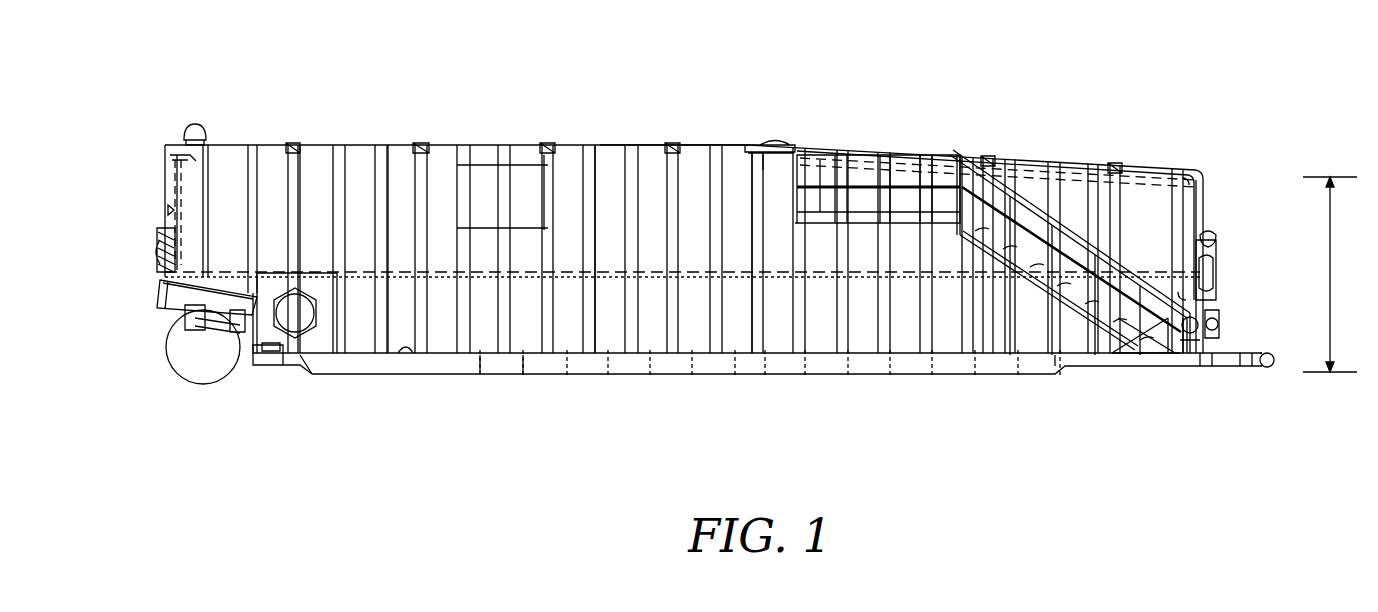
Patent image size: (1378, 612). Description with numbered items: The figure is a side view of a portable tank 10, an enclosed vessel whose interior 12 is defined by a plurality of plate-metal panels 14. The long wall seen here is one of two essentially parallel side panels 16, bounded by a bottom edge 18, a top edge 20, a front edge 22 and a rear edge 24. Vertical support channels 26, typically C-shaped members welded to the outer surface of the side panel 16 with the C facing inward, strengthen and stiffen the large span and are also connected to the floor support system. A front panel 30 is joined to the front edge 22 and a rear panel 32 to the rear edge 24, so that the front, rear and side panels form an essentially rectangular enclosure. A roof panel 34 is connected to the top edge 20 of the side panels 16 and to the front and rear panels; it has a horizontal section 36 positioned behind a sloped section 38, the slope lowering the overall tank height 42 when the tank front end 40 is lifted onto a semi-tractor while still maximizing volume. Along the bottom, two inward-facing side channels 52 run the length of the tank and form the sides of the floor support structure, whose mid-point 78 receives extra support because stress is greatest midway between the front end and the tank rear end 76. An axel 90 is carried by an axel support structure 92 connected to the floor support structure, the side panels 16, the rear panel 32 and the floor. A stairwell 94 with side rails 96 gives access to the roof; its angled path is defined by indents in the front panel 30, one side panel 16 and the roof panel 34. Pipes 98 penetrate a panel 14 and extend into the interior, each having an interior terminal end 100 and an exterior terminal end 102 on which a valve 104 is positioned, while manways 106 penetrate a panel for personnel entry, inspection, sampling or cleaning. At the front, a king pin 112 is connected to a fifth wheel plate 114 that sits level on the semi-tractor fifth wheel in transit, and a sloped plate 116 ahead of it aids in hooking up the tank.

The portable tank 10 is at (218, 452).
The enclosed interior 12 is at (650, 310).
The panels 14 is at (318, 160).
The side panels 16 is at (408, 158).
The bottom edge 18 is at (405, 348).
The top edge 20 is at (482, 148).
The front edge 22 is at (1203, 222).
The rear edge 24 is at (165, 200).
The support channels 26 is at (590, 165).
The front panel 30 is at (1233, 248).
The rear panel 32 is at (141, 224).
The roof panel 34 is at (687, 114).
The horizontal section 36 is at (710, 133).
The sloped section 38 is at (887, 142).
The tank front end 40 is at (1233, 271).
The tank height 42 is at (1332, 277).
The side channels 52 is at (512, 365).
The tank rear end 76 is at (148, 128).
The mid-point 78 is at (735, 356).
The axel 90 is at (205, 350).
The axel support structure 92 is at (160, 283).
The stairwell 94 is at (963, 233).
The side rails 96 is at (1020, 192).
The pipes 98 is at (1183, 352).
The interior terminal end 100 is at (375, 270).
The exterior terminal end 102 is at (1228, 368).
The valve 104 is at (1215, 322).
The manways 106 is at (296, 316).
The king pin 112 is at (1208, 368).
The fifth wheel plate 114 is at (1250, 367).
The sloped plate 116 is at (1270, 370).